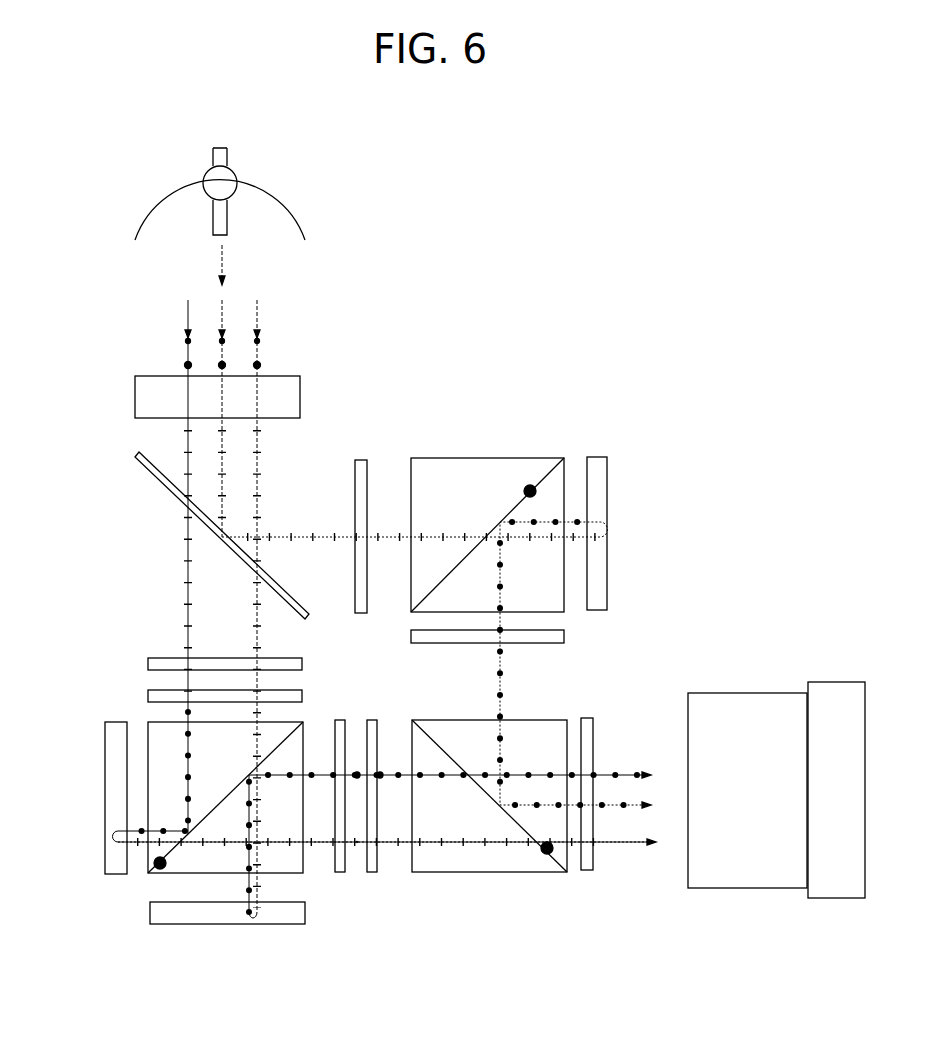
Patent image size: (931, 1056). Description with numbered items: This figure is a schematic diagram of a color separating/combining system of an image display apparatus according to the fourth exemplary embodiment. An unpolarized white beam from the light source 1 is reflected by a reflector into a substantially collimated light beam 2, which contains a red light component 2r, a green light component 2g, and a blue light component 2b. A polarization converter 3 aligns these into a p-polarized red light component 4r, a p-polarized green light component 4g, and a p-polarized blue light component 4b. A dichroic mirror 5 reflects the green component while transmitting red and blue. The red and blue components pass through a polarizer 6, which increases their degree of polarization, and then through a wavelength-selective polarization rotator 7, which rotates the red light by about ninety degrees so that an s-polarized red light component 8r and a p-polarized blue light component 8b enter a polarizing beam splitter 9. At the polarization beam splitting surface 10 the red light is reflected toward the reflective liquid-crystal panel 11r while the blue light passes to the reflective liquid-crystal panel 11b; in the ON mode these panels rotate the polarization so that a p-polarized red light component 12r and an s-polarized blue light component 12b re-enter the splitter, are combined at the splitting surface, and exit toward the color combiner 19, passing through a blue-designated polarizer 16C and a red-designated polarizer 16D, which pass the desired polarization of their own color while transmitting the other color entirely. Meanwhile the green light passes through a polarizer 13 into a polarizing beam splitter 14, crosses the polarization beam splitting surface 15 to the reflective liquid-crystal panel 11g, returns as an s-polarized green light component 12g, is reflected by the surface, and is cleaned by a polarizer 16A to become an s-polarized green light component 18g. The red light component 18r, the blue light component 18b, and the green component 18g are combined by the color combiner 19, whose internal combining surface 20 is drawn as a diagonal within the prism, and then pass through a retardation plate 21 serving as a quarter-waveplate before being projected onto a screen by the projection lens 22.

The light source 1 is at (224, 184).
The collimated light beam 2 is at (223, 263).
The red light component 2r is at (186, 313).
The green light component 2g is at (223, 308).
The blue light component 2b is at (258, 318).
The polarization converter 3 is at (146, 397).
The p-polarized red light component 4r is at (187, 453).
The p-polarized green light component 4g is at (223, 442).
The p-polarized blue light component 4b is at (258, 483).
The dichroic mirror 5 is at (137, 470).
The polarizer 6 is at (157, 657).
The wavelength-selective polarization rotator 7 is at (158, 690).
The s-polarized red light component 8r is at (184, 717).
The p-polarized blue light component 8b is at (256, 712).
The polarizing beam splitter 9 is at (158, 735).
The polarization beam splitting surface 10 is at (157, 870).
The reflective liquid-crystal panel 11r is at (110, 799).
The reflective liquid-crystal panel 11b is at (228, 918).
The reflective liquid-crystal panel 11g is at (598, 480).
The p-polarized red light component 12r is at (318, 845).
The s-polarized blue light component 12b is at (334, 772).
The s-polarized green light component 12g is at (503, 592).
The polarizer 13 is at (360, 460).
The polarizing beam splitter 14 is at (457, 473).
The polarization beam splitting surface 15 is at (530, 487).
The polarizer 16A is at (557, 643).
The blue-designated polarizer 16C is at (340, 873).
The red-designated polarizer 16D is at (372, 873).
The red light component 18r is at (355, 838).
The blue light component 18b is at (365, 777).
The s-polarized green light component 18g is at (503, 672).
The color combiner 19 is at (443, 857).
The polarization separation film 20 is at (547, 852).
The retardation plate 21 is at (595, 872).
The projection lens 22 is at (758, 697).